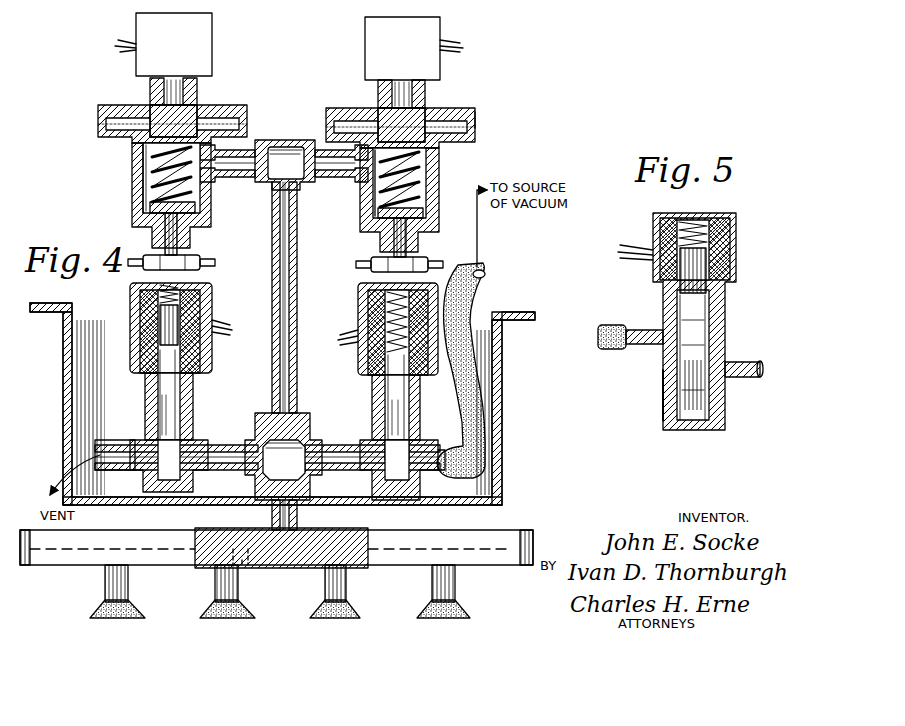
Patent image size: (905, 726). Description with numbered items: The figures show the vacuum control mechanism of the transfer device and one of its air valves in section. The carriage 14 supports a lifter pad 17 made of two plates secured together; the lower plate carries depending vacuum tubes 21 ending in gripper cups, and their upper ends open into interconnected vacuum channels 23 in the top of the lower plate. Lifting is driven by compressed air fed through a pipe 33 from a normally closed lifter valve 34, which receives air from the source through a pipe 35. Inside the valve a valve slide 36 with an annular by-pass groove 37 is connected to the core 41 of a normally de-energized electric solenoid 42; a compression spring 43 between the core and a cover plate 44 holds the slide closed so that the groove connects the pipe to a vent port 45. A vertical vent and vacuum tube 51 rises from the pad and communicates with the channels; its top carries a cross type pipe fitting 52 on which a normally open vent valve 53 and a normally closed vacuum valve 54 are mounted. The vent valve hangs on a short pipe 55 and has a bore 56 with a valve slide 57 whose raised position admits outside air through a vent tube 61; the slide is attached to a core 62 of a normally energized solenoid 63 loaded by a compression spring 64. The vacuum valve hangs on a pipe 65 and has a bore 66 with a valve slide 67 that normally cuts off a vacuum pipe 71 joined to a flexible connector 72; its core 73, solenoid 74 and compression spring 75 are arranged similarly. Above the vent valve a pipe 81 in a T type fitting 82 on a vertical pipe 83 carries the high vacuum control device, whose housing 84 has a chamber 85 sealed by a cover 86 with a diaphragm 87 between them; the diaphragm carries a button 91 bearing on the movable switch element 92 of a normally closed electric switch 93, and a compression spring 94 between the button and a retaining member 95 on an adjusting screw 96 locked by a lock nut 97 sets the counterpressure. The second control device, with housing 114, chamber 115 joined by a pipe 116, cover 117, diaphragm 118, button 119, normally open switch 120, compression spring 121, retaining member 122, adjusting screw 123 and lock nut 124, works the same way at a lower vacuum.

In FIG. 4, the carriage 14 is at (500, 430).
In FIG. 4, the lifter pad 17 is at (510, 530).
In FIG. 4, the vacuum tubes 21 is at (222, 590).
In FIG. 4, the vacuum channels 23 is at (300, 565).
In FIG. 5, the pipe 33 is at (752, 378).
In FIG. 5, the lifter valve 34 is at (718, 302).
In FIG. 5, the pipe 35 is at (630, 350).
In FIG. 5, the valve slide 36 is at (695, 375).
In FIG. 5, the by-pass groove 37 is at (715, 352).
In FIG. 5, the core 41 is at (700, 262).
In FIG. 5, the electric solenoid 42 is at (735, 228).
In FIG. 5, the compression spring 43 is at (695, 225).
In FIG. 5, the cover plate 44 is at (660, 212).
In FIG. 5, the vent port 45 is at (665, 378).
In FIG. 4, the vent and vacuum tube 51 is at (297, 520).
In FIG. 4, the cross type pipe fitting 52 is at (303, 435).
In FIG. 4, the vent valve 53 is at (163, 494).
In FIG. 4, the vacuum valve 54 is at (405, 495).
In FIG. 4, the pipe 55 is at (176, 472).
In FIG. 4, the bore 56 is at (180, 388).
In FIG. 4, the valve slide 57 is at (175, 412).
In FIG. 4, the vent tube 61 is at (108, 445).
In FIG. 4, the core 62 is at (160, 332).
In FIG. 4, the electric solenoid 63 is at (190, 322).
In FIG. 4, the compression spring 64 is at (214, 298).
In FIG. 4, the pipe 65 is at (372, 472).
In FIG. 4, the bore 66 is at (405, 407).
In FIG. 4, the valve slide 67 is at (418, 450).
In FIG. 4, the vacuum pipe 71 is at (438, 475).
In FIG. 4, the flexible connector 72 is at (485, 290).
In FIG. 4, the core 73 is at (390, 382).
In FIG. 4, the electric solenoid 74 is at (420, 300).
In FIG. 4, the compression spring 75 is at (370, 305).
In FIG. 4, the pipe 81 is at (238, 176).
In FIG. 4, the T type fitting 82 is at (297, 140).
In FIG. 4, the vertical pipe 83 is at (274, 236).
In FIG. 4, the housing 84 is at (142, 150).
In FIG. 4, the chamber 85 is at (145, 165).
In FIG. 4, the cover 86 is at (98, 113).
In FIG. 4, the diaphragm 87 is at (130, 148).
In FIG. 4, the button 91 is at (150, 102).
In FIG. 4, the movable switch element 92 is at (190, 112).
In FIG. 4, the electric switch 93 is at (163, 44).
In FIG. 4, the compression spring 94 is at (150, 185).
In FIG. 4, the retaining member 95 is at (150, 209).
In FIG. 4, the adjusting screw 96 is at (200, 258).
In FIG. 4, the lock nut 97 is at (185, 238).
In FIG. 4, the housing 114 is at (436, 200).
In FIG. 4, the chamber 115 is at (422, 183).
In FIG. 4, the pipe 116 is at (340, 177).
In FIG. 4, the cover 117 is at (431, 126).
In FIG. 4, the diaphragm 118 is at (501, 102).
In FIG. 4, the button 119 is at (381, 111).
In FIG. 4, the electric switch 120 is at (414, 48).
In FIG. 4, the compression spring 121 is at (425, 181).
In FIG. 4, the retaining member 122 is at (424, 219).
In FIG. 4, the adjusting screw 123 is at (385, 260).
In FIG. 4, the lock nut 124 is at (367, 237).